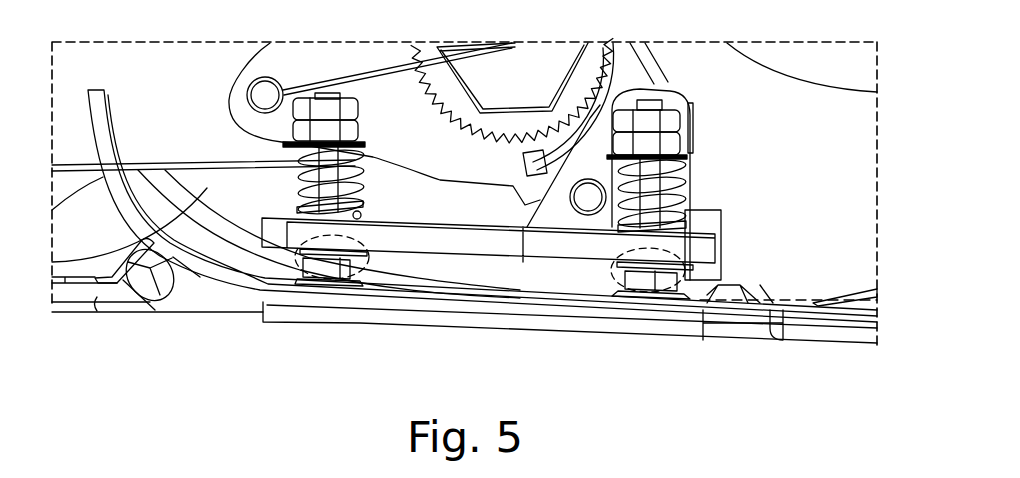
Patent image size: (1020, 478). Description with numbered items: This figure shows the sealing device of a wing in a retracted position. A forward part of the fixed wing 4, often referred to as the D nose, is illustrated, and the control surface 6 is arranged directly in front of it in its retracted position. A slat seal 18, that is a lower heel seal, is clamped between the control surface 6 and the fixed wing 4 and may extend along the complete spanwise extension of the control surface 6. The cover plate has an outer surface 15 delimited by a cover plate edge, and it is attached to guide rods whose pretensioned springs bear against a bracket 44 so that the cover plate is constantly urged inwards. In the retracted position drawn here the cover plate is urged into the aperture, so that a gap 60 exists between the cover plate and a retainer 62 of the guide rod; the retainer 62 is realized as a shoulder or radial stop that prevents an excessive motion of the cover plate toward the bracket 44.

The fixed wing 4 is at (178, 300).
The control surface 6 is at (97, 307).
The outer surface 15 is at (538, 340).
The slat seal 18 is at (148, 303).
The bracket 44 is at (447, 236).
The gap 60 is at (670, 267).
The retainer 62 is at (648, 278).